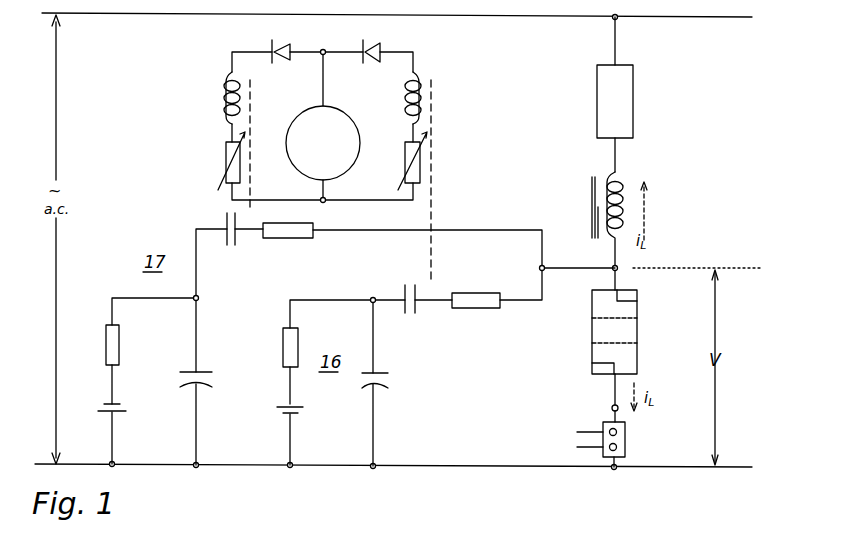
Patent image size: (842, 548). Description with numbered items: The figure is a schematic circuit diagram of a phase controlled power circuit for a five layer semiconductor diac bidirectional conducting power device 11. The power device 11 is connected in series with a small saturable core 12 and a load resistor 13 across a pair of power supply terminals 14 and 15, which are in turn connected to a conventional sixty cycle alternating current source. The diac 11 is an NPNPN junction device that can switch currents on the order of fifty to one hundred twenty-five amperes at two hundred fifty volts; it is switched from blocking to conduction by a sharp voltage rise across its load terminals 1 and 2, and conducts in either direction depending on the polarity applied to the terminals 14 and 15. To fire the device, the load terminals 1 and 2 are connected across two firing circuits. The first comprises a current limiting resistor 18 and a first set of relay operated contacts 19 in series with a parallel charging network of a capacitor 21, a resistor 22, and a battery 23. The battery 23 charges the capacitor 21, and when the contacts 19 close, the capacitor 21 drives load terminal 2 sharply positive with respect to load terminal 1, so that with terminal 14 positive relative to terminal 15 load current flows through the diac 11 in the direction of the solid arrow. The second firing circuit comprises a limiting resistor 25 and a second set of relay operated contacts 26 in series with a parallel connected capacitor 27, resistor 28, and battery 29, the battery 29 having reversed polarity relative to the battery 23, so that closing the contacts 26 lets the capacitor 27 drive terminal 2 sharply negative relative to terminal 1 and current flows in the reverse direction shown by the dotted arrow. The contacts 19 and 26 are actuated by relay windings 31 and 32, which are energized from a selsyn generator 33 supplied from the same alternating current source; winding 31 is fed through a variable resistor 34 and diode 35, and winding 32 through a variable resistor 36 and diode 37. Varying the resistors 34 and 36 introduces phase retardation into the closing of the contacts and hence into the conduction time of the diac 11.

The load terminal 1 is at (611, 407).
The load terminal 2 is at (651, 258).
The diac bidirectional conducting power device 11 is at (637, 334).
The small saturable core 12 is at (608, 176).
The load resistor 13 is at (633, 98).
The power supply terminal 14 is at (545, 20).
The power supply terminal 15 is at (465, 468).
The current limiting resistor 18 is at (476, 292).
The first set of relay operated contacts 19 is at (418, 308).
The capacitor 21 is at (388, 374).
The resistor 22 is at (298, 339).
The battery 23 is at (300, 406).
The limiting resistor 25 is at (300, 238).
The second set of relay operated contacts 26 is at (226, 222).
The capacitor 27 is at (204, 372).
The resistor 28 is at (119, 336).
The battery 29 is at (120, 408).
The relay winding 31 is at (420, 82).
The relay winding 32 is at (228, 84).
The selsyn generator 33 is at (338, 117).
The variable resistor 34 is at (405, 153).
The diode 35 is at (380, 50).
The variable resistor 36 is at (226, 153).
The diode 37 is at (280, 48).